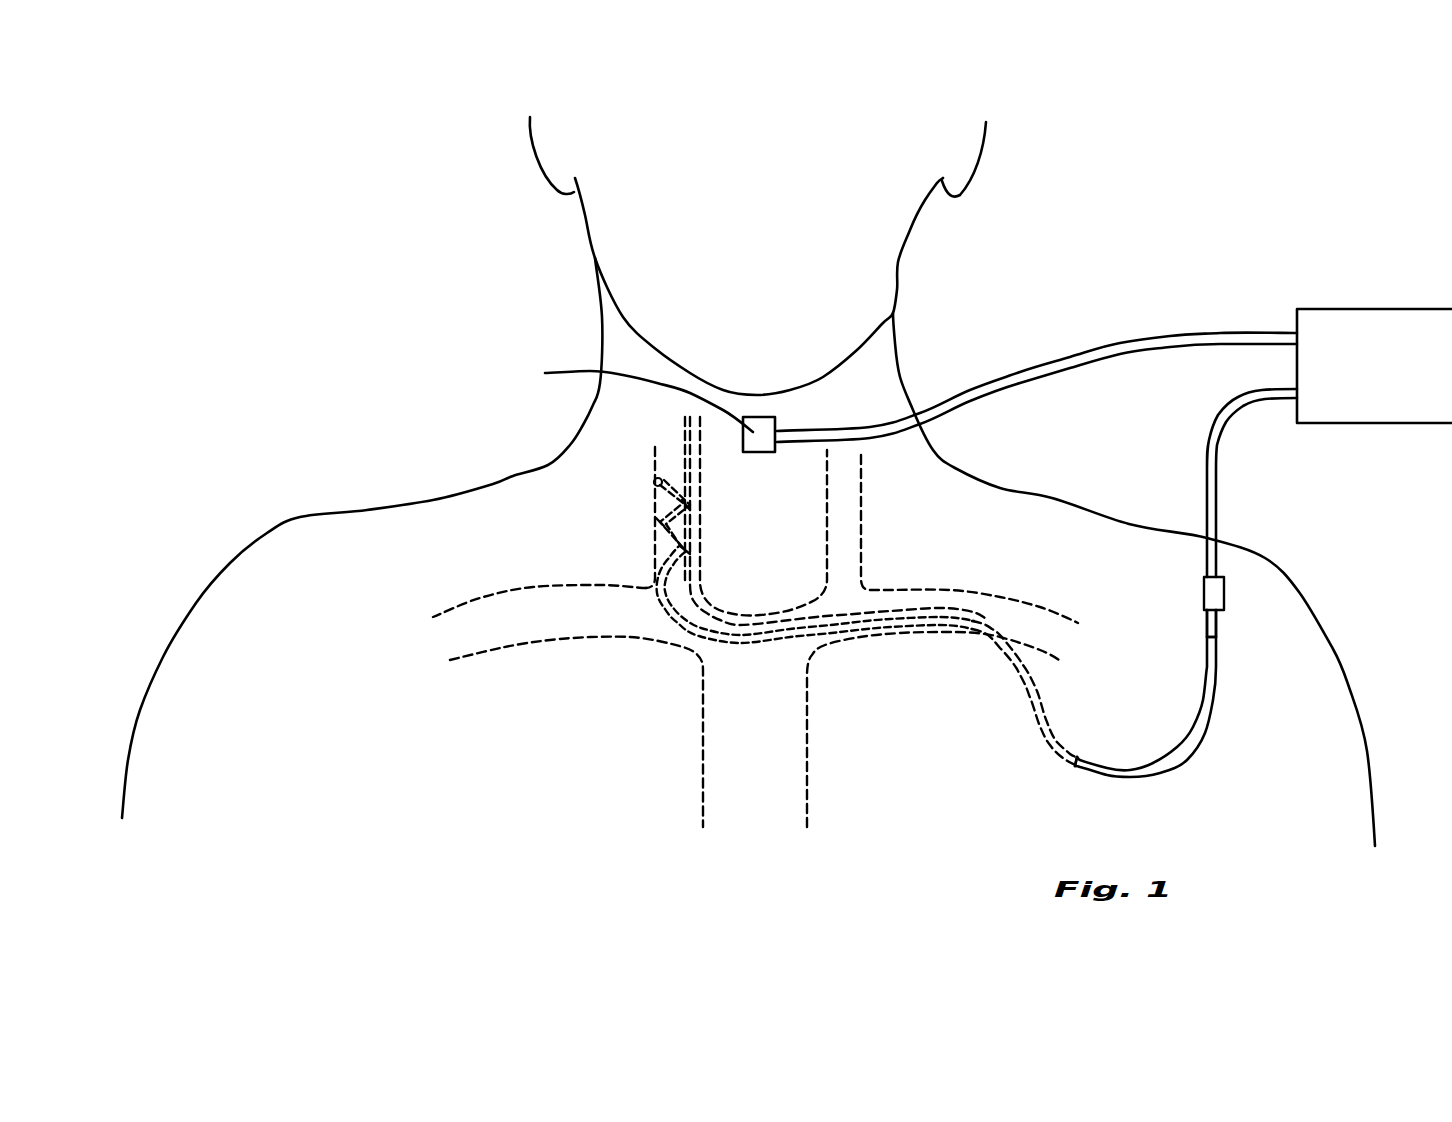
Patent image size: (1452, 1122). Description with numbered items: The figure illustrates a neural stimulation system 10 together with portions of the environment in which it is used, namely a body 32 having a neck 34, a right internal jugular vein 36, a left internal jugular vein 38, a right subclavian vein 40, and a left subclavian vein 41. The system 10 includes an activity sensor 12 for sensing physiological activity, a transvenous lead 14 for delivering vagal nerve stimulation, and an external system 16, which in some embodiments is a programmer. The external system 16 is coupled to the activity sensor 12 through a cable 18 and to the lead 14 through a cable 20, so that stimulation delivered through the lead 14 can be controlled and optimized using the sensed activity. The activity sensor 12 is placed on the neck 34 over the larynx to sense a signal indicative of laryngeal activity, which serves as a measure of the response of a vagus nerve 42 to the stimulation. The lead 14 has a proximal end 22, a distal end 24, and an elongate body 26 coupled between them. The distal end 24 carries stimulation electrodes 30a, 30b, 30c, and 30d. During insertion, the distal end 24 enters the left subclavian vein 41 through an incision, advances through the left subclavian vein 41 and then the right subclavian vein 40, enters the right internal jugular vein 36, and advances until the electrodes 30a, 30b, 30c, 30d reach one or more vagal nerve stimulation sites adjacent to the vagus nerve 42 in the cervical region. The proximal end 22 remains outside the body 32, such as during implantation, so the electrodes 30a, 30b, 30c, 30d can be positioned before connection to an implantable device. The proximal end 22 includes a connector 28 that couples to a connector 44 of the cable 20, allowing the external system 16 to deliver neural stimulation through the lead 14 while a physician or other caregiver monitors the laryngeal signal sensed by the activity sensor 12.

The neural stimulation system 10 is at (1150, 235).
The activity sensor 12 is at (631, 397).
The transvenous lead 14 is at (1045, 707).
The external system 16 is at (1420, 309).
The cable 18 is at (1190, 332).
The cable 20 is at (1217, 485).
The proximal end 22 is at (1207, 618).
The distal end 24 is at (676, 499).
The elongate body 26 is at (1053, 744).
The connector 28 is at (1216, 628).
The stimulation electrode 30a is at (684, 550).
The stimulation electrode 30b is at (660, 522).
The stimulation electrode 30c is at (686, 506).
The stimulation electrode 30d is at (652, 480).
The body 32 is at (350, 513).
The neck 34 is at (890, 368).
The right internal jugular vein 36 is at (655, 545).
The left internal jugular vein 38 is at (860, 528).
The right subclavian vein 40 is at (640, 636).
The left subclavian vein 41 is at (890, 636).
The vagus nerve 42 is at (700, 466).
The connector 44 is at (1226, 588).